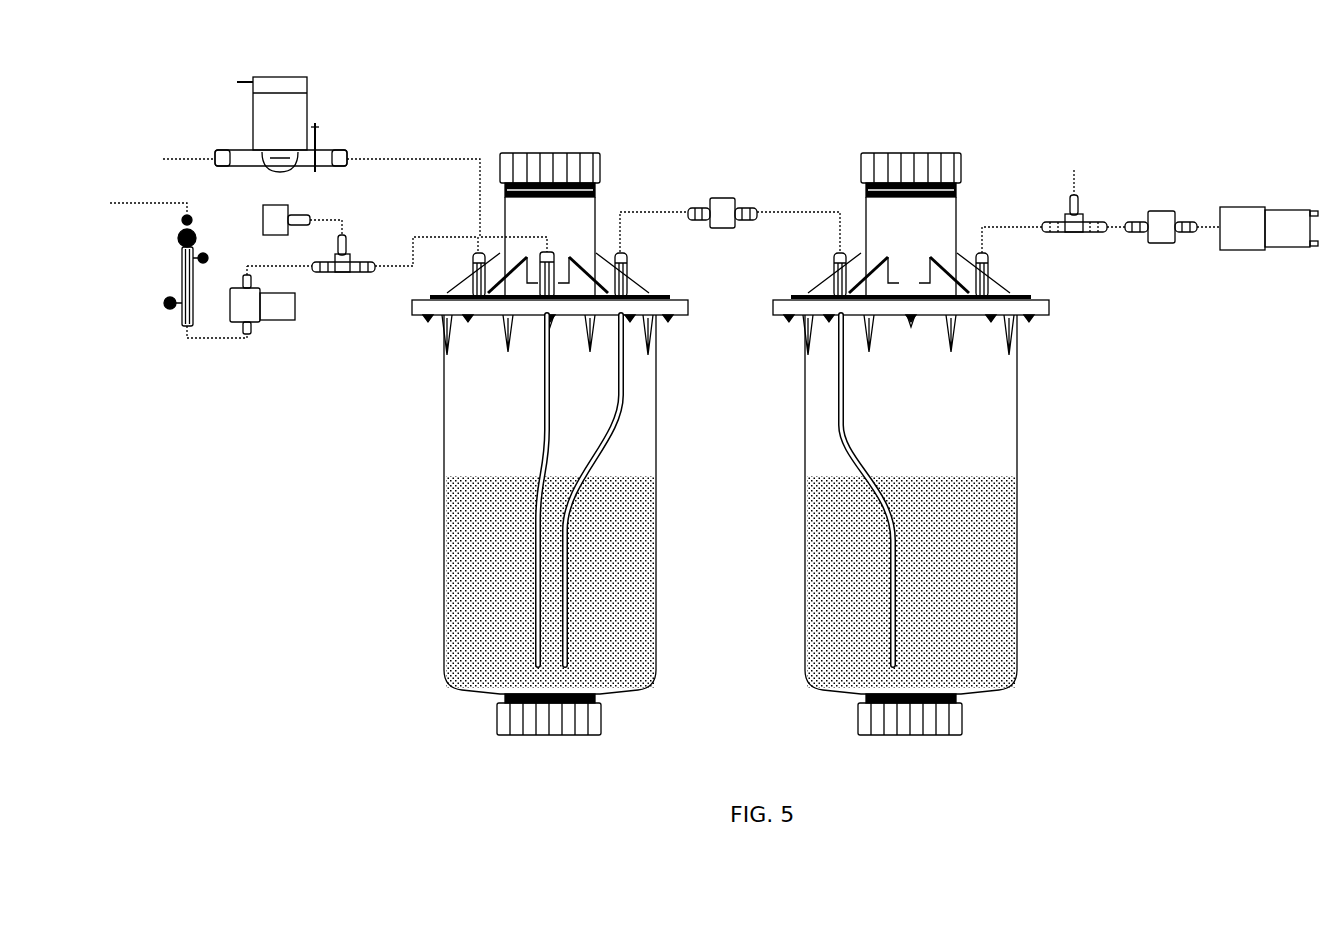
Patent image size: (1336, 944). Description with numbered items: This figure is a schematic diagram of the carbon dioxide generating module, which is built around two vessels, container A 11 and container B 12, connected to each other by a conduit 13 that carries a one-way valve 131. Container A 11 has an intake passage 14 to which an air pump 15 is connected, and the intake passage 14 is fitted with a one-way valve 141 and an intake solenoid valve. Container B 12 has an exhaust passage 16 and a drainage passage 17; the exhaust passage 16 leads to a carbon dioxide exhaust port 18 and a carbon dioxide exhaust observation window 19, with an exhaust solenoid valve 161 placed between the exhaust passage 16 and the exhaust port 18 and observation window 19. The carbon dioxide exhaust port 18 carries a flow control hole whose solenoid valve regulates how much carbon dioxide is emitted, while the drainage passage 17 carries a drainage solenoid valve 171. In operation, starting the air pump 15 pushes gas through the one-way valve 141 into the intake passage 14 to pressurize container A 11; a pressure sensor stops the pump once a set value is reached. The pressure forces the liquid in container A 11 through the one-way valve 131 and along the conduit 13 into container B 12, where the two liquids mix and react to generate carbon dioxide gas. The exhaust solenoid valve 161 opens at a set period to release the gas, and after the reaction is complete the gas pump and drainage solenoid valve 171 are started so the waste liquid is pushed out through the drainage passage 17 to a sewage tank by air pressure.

The container A 11 is at (1015, 448).
The container B 12 is at (655, 448).
The conduit 13 is at (835, 275).
The one-way valve 131 is at (720, 212).
The intake passage 14 is at (992, 273).
The one-way valve 141 is at (1157, 225).
The air pump 15 is at (1247, 215).
The exhaust passage 16 is at (470, 272).
The exhaust solenoid valve 161 is at (255, 312).
The drainage passage 17 is at (546, 272).
The drainage solenoid valve 171 is at (293, 115).
The carbon dioxide exhaust port 18 is at (177, 232).
The carbon dioxide exhaust observation window 19 is at (180, 273).